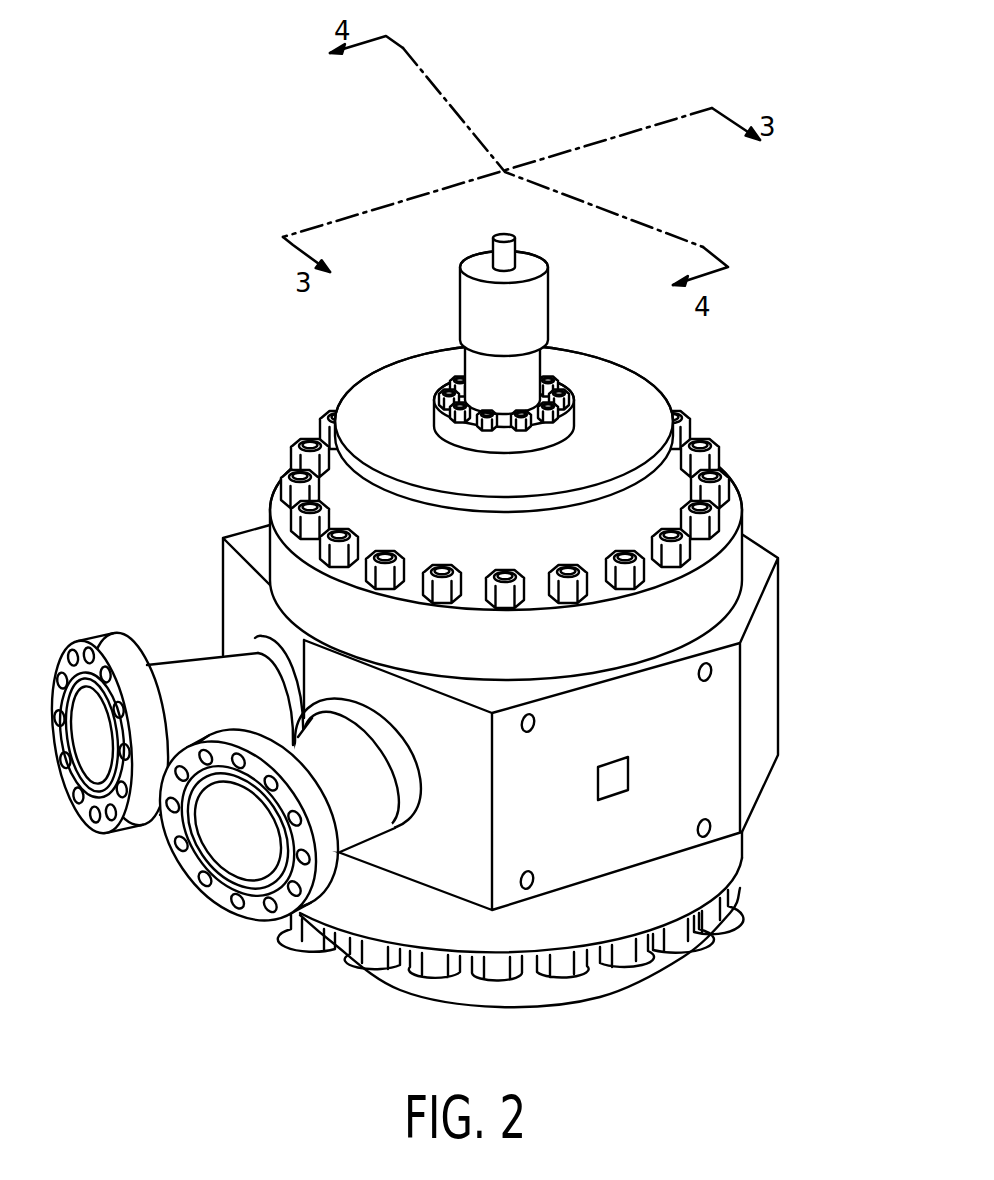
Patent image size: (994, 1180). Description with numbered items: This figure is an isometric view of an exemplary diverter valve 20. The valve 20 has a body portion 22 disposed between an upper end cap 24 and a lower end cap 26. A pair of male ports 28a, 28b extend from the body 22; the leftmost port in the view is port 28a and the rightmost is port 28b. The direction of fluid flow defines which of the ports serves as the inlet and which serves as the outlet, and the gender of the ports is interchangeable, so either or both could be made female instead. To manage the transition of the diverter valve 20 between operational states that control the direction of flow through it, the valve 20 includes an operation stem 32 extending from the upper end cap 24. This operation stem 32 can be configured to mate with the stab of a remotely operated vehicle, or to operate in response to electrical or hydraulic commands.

The diverter valve 20 is at (768, 350).
The body portion 22 is at (760, 730).
The end cap 24 is at (722, 567).
The end cap 26 is at (733, 855).
The male port 28a is at (185, 672).
The male port 28b is at (263, 922).
The operation stem 32 is at (475, 333).